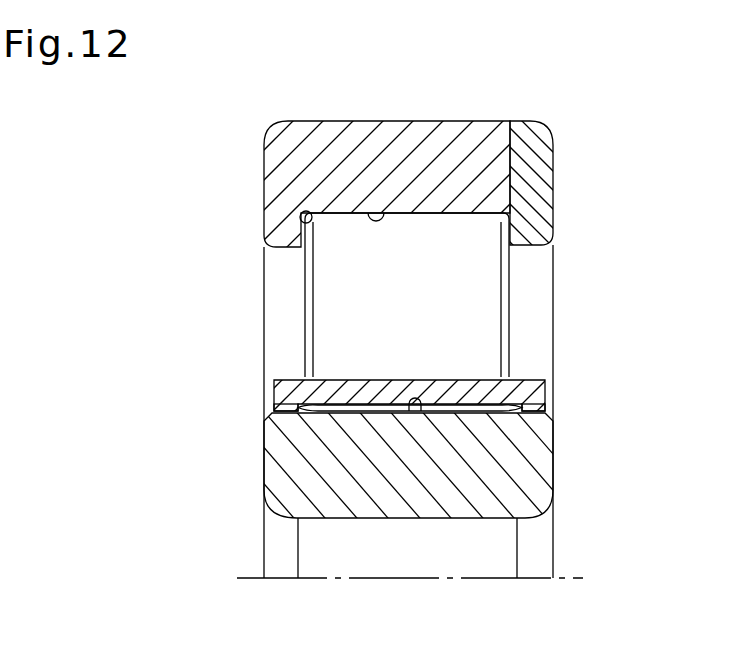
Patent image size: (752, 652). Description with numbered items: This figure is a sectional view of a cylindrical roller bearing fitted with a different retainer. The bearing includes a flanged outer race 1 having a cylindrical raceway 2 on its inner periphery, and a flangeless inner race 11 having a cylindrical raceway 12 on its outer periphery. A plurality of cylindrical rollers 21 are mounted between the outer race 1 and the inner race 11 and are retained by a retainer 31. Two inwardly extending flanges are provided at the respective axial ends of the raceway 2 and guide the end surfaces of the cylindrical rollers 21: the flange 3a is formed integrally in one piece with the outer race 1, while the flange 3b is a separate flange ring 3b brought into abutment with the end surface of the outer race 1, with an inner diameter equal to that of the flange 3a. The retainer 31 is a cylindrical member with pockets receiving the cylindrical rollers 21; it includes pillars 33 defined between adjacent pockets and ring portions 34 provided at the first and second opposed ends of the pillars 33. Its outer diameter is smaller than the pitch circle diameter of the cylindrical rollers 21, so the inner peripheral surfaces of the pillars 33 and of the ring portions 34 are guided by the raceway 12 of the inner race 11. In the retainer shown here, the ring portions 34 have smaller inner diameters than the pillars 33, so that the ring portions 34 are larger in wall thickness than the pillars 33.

The outer race 1 is at (305, 133).
The raceway 2 is at (385, 212).
The flange 3a is at (277, 220).
The flange ring 3b is at (543, 162).
The inner race 11 is at (275, 475).
The raceway 12 is at (418, 404).
The cylindrical rollers 21 is at (323, 270).
The retainer 31 is at (293, 378).
The pillars 33 is at (403, 380).
The ring portions 34 is at (285, 402).